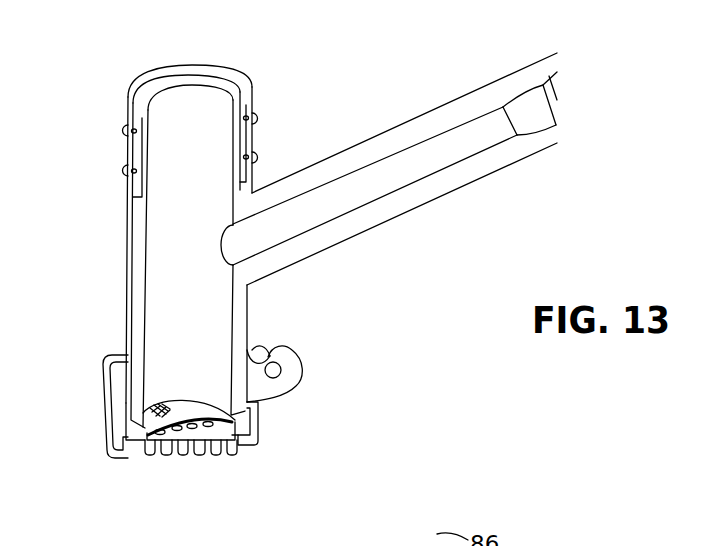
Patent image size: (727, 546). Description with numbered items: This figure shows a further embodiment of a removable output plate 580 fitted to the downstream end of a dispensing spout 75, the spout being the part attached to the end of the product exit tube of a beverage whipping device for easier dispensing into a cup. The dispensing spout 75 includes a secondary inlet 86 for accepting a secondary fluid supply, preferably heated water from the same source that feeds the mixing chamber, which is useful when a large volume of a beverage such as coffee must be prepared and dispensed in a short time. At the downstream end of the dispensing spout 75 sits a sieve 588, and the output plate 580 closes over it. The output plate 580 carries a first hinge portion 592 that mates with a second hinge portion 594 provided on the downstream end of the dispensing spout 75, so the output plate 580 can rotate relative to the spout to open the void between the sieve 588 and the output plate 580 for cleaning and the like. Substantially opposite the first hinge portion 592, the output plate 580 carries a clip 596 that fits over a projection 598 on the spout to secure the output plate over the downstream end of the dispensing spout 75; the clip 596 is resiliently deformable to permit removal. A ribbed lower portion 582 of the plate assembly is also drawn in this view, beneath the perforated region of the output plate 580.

The secondary inlet 86 is at (193, 118).
The dispensing spout 75 is at (400, 183).
The sieve 588 is at (183, 403).
The first hinge portion 592 is at (262, 352).
The second hinge portion 594 is at (293, 370).
The clip 596 is at (110, 396).
The projection 598 is at (134, 443).
The removable output plate 580 is at (235, 440).
The ribbed base 582 is at (166, 458).